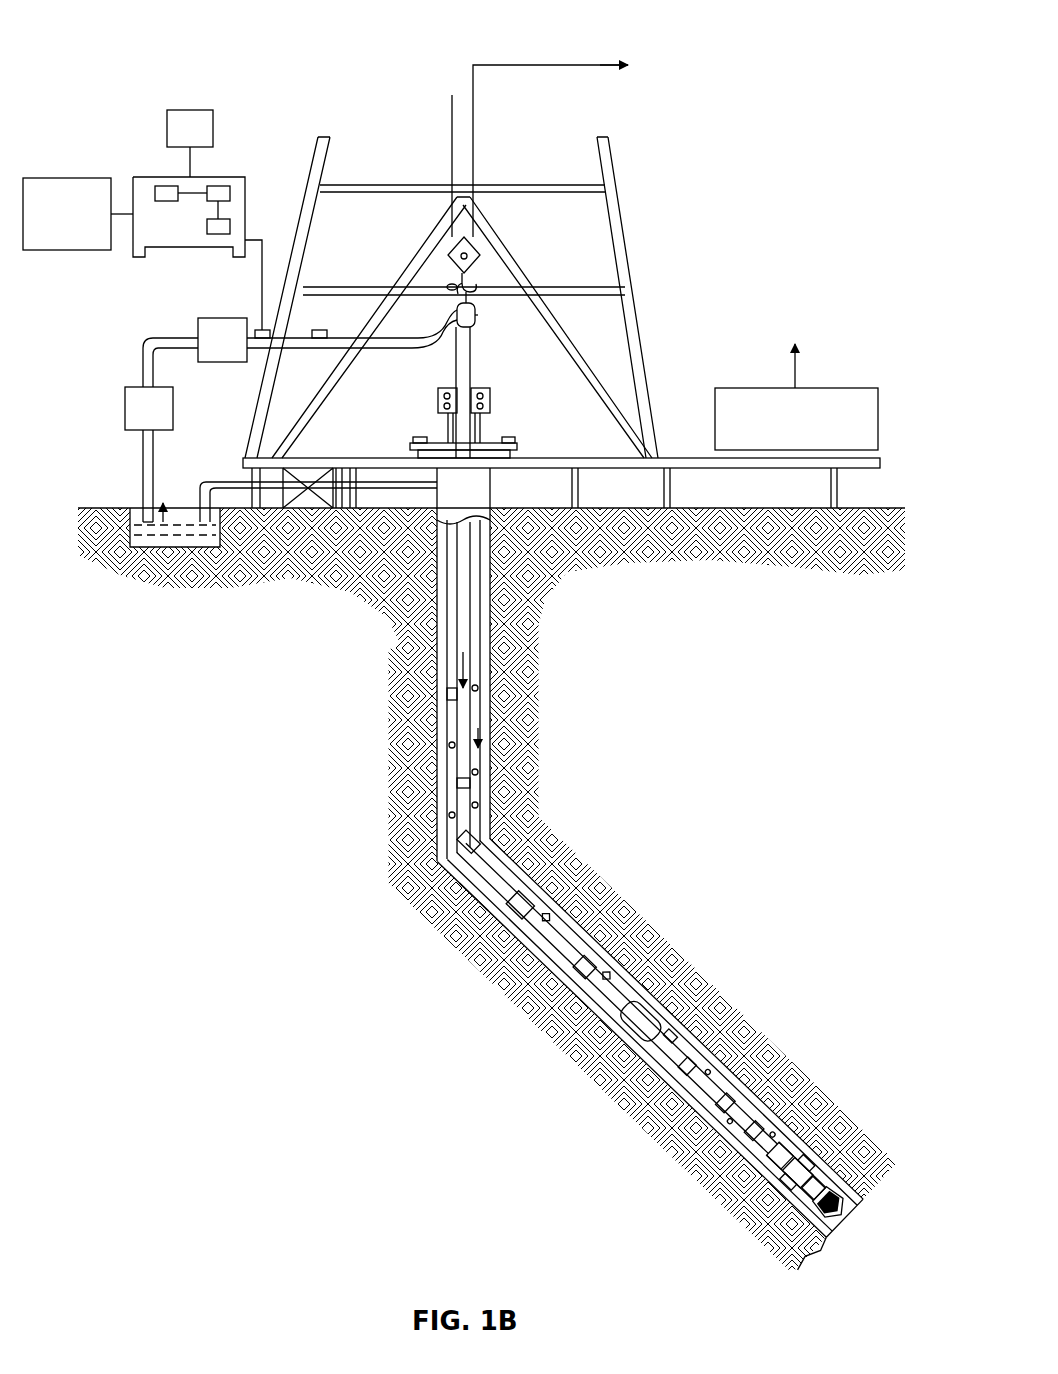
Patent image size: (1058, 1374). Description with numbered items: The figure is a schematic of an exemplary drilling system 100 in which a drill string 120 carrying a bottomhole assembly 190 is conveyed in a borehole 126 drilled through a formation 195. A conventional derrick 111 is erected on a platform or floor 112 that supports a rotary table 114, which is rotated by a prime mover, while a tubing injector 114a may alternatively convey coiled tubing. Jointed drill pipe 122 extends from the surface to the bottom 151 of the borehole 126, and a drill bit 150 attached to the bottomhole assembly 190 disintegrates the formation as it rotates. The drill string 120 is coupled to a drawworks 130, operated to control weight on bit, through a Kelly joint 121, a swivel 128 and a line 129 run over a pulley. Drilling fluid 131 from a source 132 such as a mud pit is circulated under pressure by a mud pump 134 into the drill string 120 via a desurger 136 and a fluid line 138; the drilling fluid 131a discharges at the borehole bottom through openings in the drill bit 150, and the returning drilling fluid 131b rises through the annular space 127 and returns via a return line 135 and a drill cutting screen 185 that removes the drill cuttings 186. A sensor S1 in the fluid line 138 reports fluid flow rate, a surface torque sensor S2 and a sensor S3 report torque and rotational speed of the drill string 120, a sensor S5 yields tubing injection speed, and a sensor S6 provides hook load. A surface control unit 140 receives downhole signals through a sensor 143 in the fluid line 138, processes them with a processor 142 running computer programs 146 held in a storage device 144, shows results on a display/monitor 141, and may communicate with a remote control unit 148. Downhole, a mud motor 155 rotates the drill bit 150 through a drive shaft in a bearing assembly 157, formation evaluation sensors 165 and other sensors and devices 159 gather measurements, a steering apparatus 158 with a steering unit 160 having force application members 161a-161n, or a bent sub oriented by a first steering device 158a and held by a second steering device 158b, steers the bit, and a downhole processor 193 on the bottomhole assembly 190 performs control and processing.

The drilling system 100 is at (120, 36).
The derrick 111 is at (640, 305).
The platform or floor 112 is at (654, 452).
The rotary table 114 is at (500, 440).
The tubing injector 114a is at (492, 398).
The drill string 120 is at (484, 733).
The Kelly joint 121 is at (474, 372).
The drill pipe 122 is at (455, 730).
The borehole 126 is at (490, 815).
The annular space 127 is at (520, 856).
The swivel 128 is at (452, 328).
The line 129 is at (478, 170).
The drawworks 130 is at (815, 388).
The drilling fluid 131 is at (142, 542).
The drilling fluid 131a is at (447, 655).
The returning drilling fluid 131b is at (452, 848).
The source 132 is at (154, 540).
The mud pump 134 is at (125, 410).
The return line 135 is at (335, 556).
The desurger 136 is at (200, 330).
The fluid line 138 is at (278, 352).
The surface control unit 140 is at (172, 180).
The display/monitor 141 is at (190, 110).
The processor 142 is at (165, 186).
The sensor 143 is at (260, 328).
The storage device 144 is at (218, 186).
The computer programs 146 is at (214, 234).
The remote control unit 148 is at (92, 178).
The drill bit 150 is at (843, 1182).
The bottom 151 is at (795, 1254).
The mud motor 155 is at (585, 932).
The bearing assembly 157 is at (830, 1097).
The steering apparatus 158 is at (808, 1130).
The first steering device 158a is at (772, 1230).
The second steering device 158b is at (775, 1205).
The sensors and devices 159 is at (835, 1160).
The steering unit 160 is at (778, 1170).
The force application members 161a-161n is at (785, 1135).
The formation evaluation sensors 165 is at (670, 1092).
The drill cutting screen 185 is at (300, 455).
The drill cuttings 186 is at (480, 690).
The bottomhole assembly 190 is at (678, 1014).
The downhole processor 193 is at (627, 1047).
The formation 195 is at (771, 920).
The sensor S1 is at (320, 330).
The surface torque sensor S2 is at (520, 444).
The sensor S3 is at (418, 438).
The sensor S5 is at (480, 332).
The sensor S6 is at (470, 294).